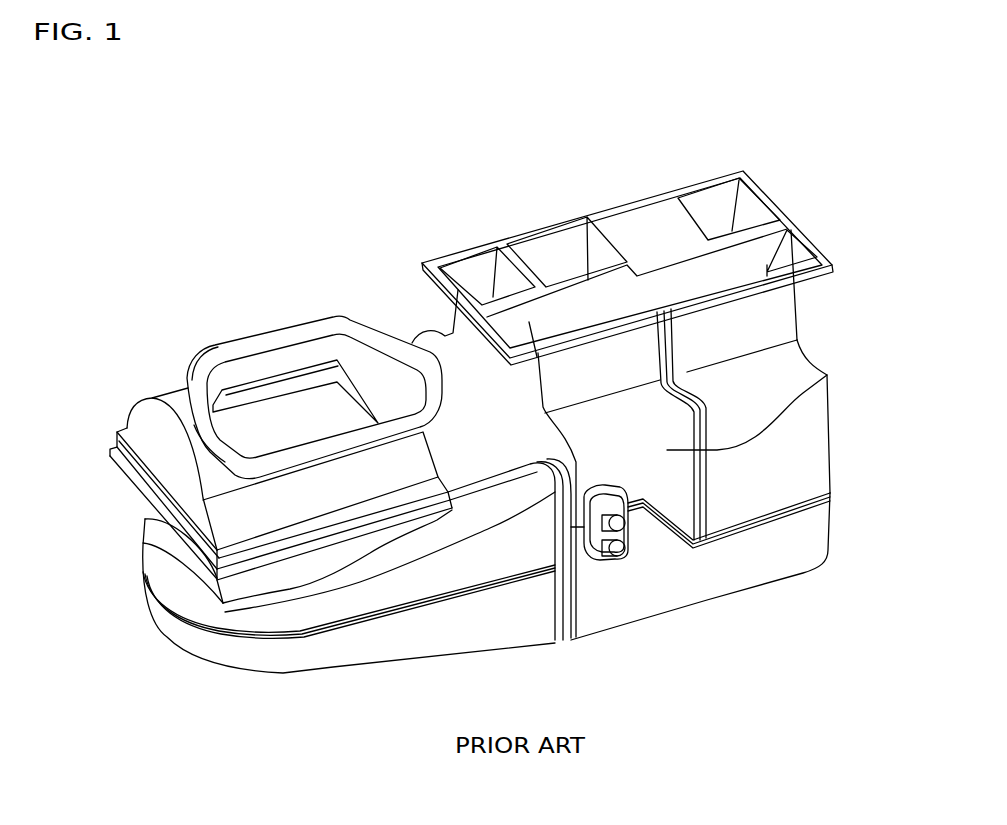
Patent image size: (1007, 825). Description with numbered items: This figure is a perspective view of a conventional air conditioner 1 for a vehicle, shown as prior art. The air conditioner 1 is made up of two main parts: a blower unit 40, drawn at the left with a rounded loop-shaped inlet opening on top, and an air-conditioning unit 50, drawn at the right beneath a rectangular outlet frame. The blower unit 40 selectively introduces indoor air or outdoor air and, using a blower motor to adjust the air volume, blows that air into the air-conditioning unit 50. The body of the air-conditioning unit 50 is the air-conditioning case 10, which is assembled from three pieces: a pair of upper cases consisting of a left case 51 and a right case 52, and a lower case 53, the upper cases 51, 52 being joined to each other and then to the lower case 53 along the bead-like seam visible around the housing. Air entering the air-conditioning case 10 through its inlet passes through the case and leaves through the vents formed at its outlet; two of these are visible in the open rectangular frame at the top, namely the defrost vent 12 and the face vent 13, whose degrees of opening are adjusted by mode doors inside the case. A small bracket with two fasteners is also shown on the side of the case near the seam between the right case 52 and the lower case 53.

The air conditioner 1 is at (326, 176).
The air-conditioning case 10 is at (895, 373).
The defrost vent 12 is at (710, 282).
The face vent 13 is at (645, 228).
The blower unit 40 is at (243, 326).
The air-conditioning unit 50 is at (548, 200).
The left case 51 is at (822, 377).
The right case 52 is at (808, 455).
The lower case 53 is at (805, 543).